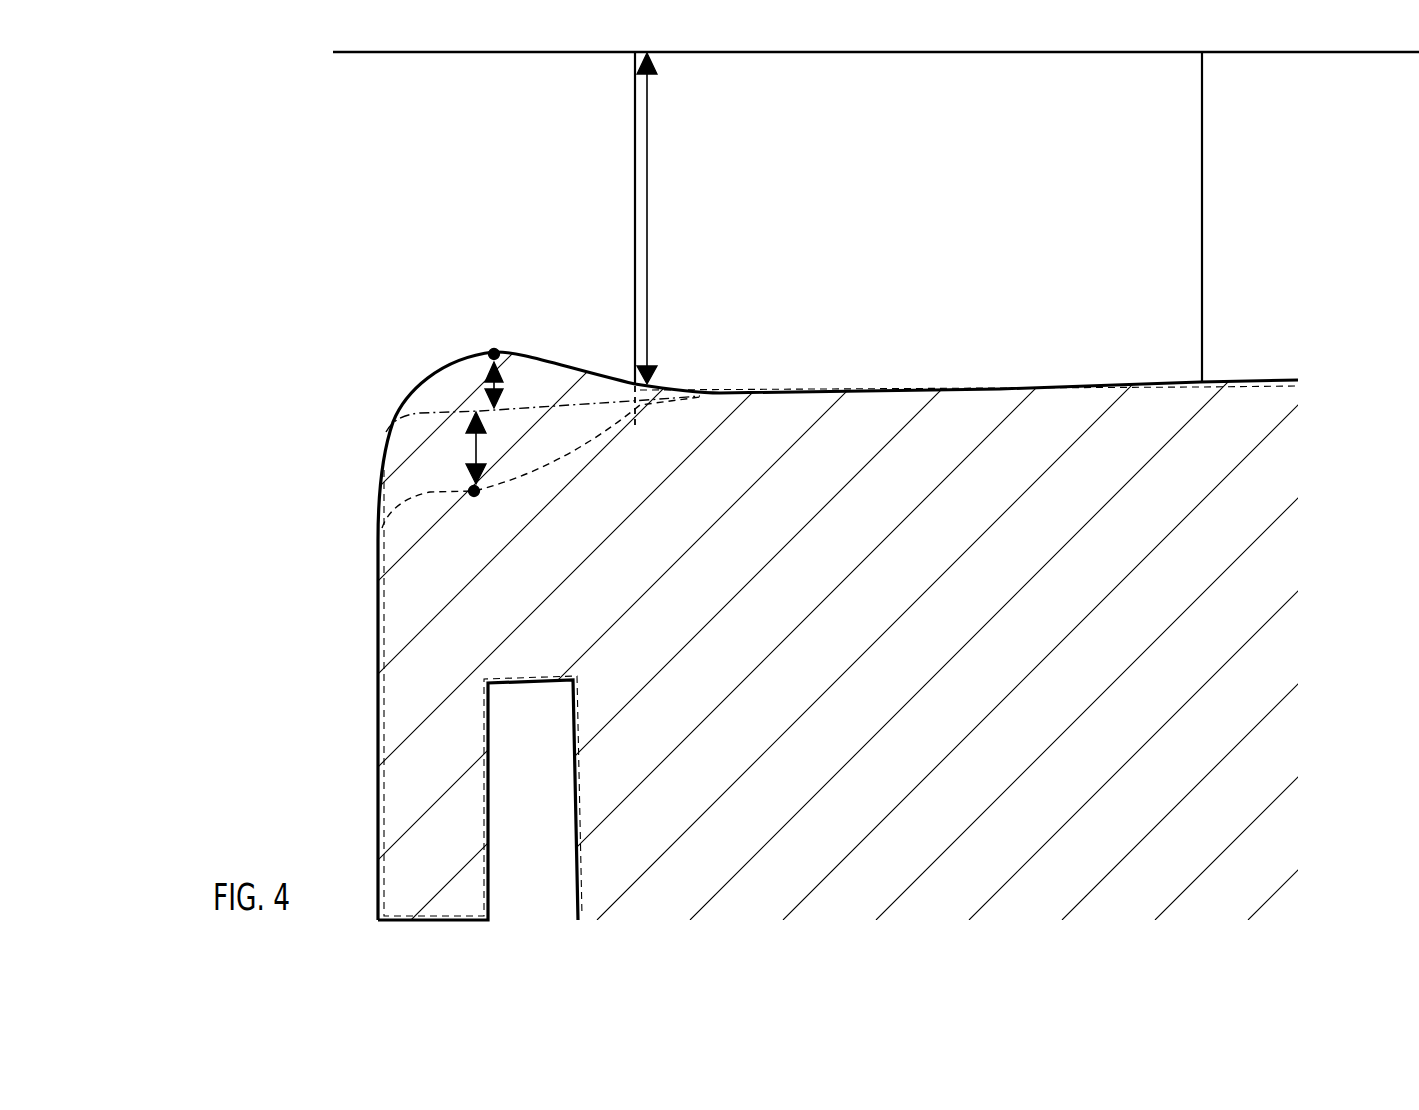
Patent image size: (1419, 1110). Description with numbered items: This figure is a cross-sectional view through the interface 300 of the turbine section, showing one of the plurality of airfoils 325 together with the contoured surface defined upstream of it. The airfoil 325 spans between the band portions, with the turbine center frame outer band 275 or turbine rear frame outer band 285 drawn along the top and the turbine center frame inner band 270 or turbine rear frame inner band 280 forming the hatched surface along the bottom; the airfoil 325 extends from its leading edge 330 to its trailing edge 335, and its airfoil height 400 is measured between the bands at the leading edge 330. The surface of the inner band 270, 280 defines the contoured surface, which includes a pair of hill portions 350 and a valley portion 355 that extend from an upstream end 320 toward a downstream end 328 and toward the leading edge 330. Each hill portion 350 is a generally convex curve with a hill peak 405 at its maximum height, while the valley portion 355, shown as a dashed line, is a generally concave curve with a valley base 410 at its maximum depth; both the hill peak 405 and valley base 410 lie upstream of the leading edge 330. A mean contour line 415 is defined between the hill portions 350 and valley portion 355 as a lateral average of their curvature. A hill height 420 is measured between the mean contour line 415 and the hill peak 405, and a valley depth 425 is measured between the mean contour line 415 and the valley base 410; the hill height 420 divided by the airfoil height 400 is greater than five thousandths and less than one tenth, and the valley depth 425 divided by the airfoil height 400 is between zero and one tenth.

The interface 300 is at (140, 174).
The upstream end 320 is at (310, 300).
The plurality of airfoils 325 is at (849, 175).
The downstream end 328 is at (1330, 382).
The leading edge 330 is at (633, 108).
The trailing edge 335 is at (1202, 197).
The pair of hill portions 350 is at (525, 352).
The valley portion 355 is at (527, 468).
The airfoil height 400 is at (648, 227).
The hill peak 405 is at (494, 352).
The valley base 410 is at (474, 496).
The mean contour line 415 is at (527, 410).
The hill height 420 is at (490, 385).
The valley depth 425 is at (472, 450).
The turbine center frame inner band 270 is at (1017, 339).
The turbine rear frame inner band 280 is at (1250, 380).
The turbine center frame outer band 275 is at (876, 26).
The turbine rear frame outer band 285 is at (1338, 50).